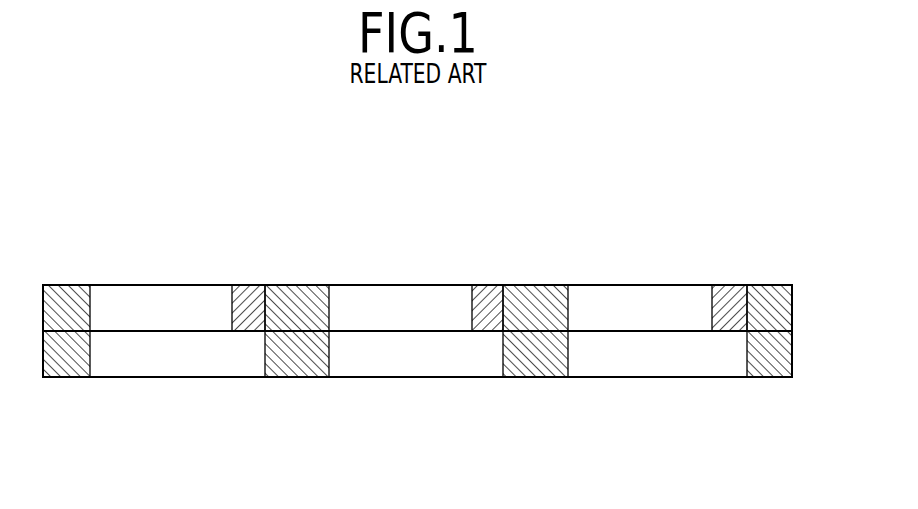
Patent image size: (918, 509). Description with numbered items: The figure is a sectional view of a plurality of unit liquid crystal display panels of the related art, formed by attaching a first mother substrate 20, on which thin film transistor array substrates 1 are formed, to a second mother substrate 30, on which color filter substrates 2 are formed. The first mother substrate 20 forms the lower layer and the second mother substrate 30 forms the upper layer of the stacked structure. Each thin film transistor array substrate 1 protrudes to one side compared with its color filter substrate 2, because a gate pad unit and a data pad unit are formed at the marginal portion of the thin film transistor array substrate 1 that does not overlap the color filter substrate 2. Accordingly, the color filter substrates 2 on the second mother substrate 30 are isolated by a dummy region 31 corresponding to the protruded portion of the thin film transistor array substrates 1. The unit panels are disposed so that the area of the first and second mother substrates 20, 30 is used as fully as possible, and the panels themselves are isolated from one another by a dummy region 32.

The thin film transistor array substrate 1 is at (175, 360).
The color filter substrate 2 is at (177, 302).
The first mother substrate 20 is at (803, 334).
The second mother substrate 30 is at (803, 288).
The dummy region 31 is at (250, 288).
The dummy region 32 is at (65, 287).